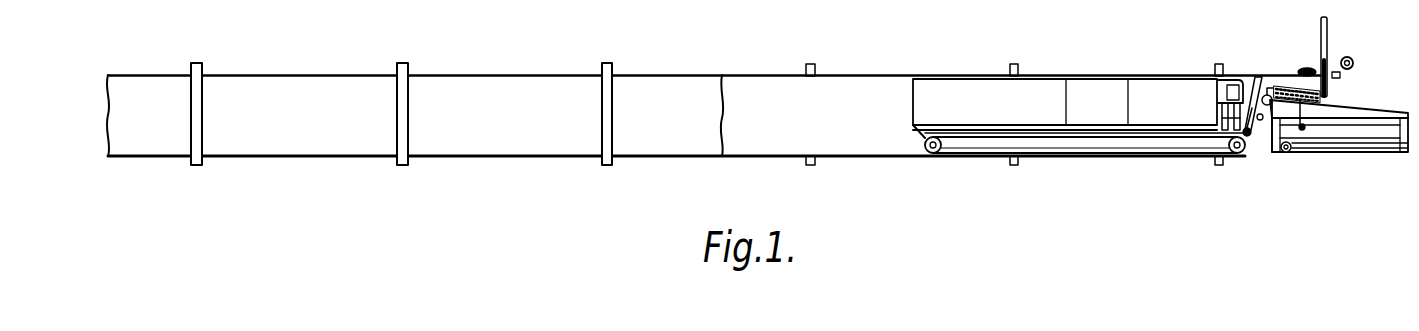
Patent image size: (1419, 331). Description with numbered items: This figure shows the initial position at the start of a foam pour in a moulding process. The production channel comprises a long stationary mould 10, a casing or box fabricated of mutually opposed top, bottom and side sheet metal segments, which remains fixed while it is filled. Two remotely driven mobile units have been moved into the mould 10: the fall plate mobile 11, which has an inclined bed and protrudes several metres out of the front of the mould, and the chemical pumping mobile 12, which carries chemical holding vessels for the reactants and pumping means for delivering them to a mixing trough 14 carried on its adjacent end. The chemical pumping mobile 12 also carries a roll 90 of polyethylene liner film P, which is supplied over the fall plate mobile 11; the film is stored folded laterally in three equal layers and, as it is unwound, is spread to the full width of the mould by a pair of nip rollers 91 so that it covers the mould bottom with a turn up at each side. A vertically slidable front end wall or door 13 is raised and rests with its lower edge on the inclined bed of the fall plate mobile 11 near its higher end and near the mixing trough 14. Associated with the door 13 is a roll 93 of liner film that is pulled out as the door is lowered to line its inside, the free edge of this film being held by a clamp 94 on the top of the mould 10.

The mould 10 is at (560, 156).
The fall plate mobile 11 is at (1335, 147).
The chemical pumping mobile 12 is at (1075, 143).
The door 13 is at (1329, 27).
The mixing trough 14 is at (1262, 90).
The polyethylene liner film P is at (1272, 96).
The roll 90 is at (1249, 136).
The nip rollers 91 is at (1271, 106).
The roll 93 is at (1353, 68).
The clamp 94 is at (1306, 70).